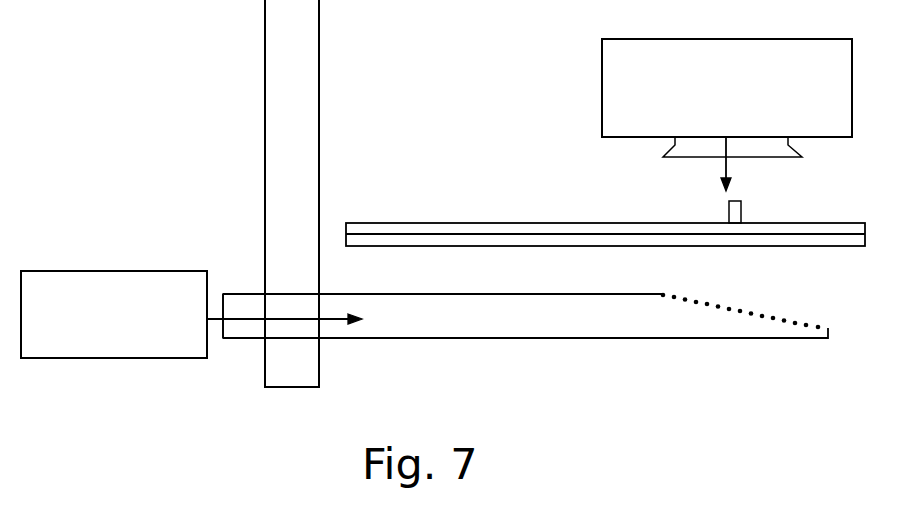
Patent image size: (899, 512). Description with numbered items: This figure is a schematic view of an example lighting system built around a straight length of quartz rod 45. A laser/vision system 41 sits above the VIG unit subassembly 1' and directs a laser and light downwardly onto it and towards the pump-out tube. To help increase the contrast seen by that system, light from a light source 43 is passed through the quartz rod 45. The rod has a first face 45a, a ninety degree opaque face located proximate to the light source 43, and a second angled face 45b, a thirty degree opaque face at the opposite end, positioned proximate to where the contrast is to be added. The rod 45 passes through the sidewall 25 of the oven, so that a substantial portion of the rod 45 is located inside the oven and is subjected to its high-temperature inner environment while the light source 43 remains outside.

The sidewall 25 is at (271, 73).
The light source 43 is at (125, 279).
The quartz rod 45 is at (485, 325).
The first face 45a is at (247, 305).
The second angled face 45b is at (708, 302).
The VIG unit subassembly 1' is at (605, 167).
The laser/vision system 41 is at (601, 61).